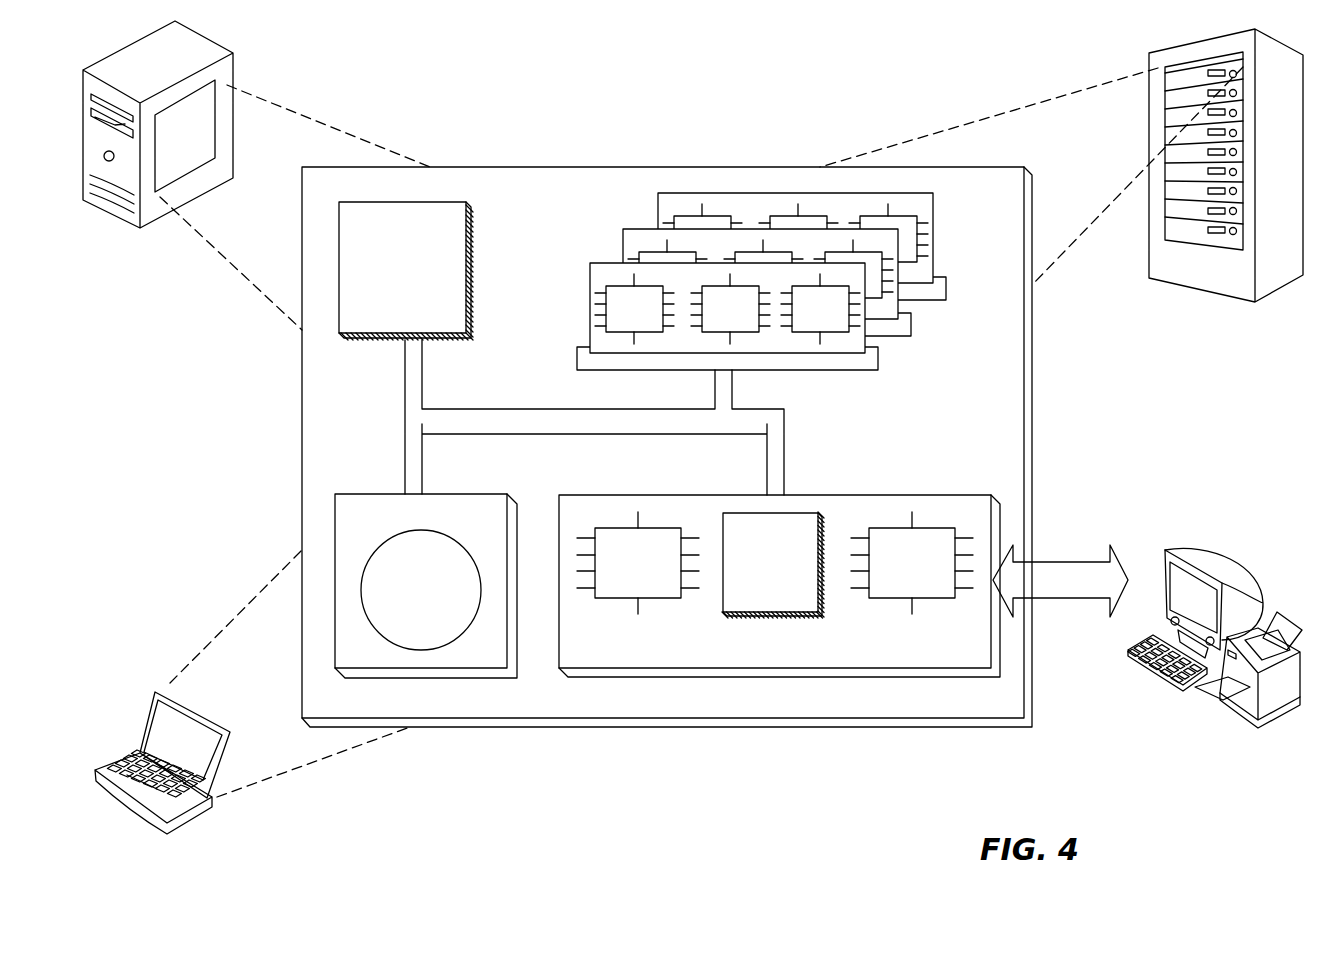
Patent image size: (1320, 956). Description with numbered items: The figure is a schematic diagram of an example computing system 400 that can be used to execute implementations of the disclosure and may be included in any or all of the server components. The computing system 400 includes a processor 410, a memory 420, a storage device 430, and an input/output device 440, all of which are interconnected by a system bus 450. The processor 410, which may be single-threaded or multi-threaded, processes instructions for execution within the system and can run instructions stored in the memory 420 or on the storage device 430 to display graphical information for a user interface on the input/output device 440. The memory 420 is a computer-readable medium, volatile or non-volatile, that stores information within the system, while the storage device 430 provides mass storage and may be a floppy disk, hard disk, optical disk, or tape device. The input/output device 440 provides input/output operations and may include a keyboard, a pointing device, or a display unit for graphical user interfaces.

The computing system 400 is at (492, 92).
The processor 410 is at (456, 328).
The memory 420 is at (938, 333).
The storage device 430 is at (499, 658).
The input/output device 440 is at (1165, 553).
The system bus 450 is at (590, 427).